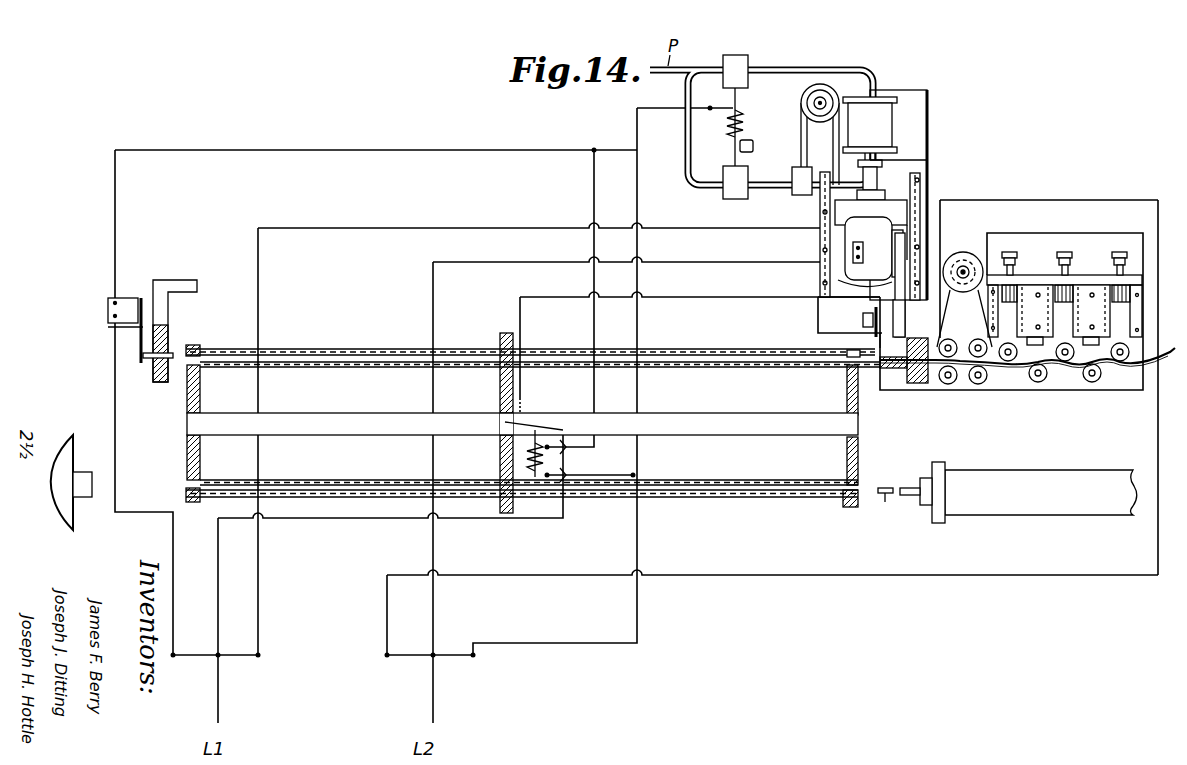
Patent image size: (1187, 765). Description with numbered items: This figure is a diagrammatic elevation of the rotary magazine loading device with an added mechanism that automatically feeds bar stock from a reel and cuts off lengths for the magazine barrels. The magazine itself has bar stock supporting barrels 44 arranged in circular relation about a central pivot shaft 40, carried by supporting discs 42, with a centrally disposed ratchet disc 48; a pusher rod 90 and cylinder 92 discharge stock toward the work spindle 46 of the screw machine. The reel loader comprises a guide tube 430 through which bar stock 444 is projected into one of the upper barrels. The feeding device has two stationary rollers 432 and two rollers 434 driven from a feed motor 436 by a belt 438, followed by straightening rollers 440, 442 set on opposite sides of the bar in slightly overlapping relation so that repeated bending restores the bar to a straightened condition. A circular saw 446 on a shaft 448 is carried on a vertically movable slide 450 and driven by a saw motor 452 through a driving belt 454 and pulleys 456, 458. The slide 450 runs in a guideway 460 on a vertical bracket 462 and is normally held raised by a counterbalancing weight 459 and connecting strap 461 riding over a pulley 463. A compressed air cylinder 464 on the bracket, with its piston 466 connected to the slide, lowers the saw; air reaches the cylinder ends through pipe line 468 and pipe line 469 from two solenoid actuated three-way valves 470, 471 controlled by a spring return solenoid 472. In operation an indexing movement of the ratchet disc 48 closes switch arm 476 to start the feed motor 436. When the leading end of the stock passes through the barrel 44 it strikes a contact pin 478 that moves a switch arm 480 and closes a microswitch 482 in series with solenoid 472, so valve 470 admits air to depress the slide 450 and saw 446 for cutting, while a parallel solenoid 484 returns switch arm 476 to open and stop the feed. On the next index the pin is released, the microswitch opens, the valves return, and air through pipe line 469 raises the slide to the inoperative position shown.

The central pivot shaft 40 is at (352, 413).
The supporting discs 42 is at (203, 403).
The bar stock supporting barrel 44 is at (342, 350).
The work spindle 46 is at (83, 472).
The ratchet disc 48 is at (500, 378).
The pusher rod 90 is at (885, 503).
The cylinder 92 is at (1048, 500).
The guide tube 430 is at (900, 382).
The stationary rollers 432 is at (980, 385).
The driven rollers 434 is at (977, 338).
The feed motor 436 is at (962, 258).
The belt 438 is at (990, 293).
The straightening rollers 440 is at (1097, 385).
The straightening rollers 442 is at (1120, 363).
The bar stock 444 is at (1150, 362).
The circular saw 446 is at (880, 345).
The shaft 448 is at (865, 320).
The slide 450 is at (892, 212).
The saw motor 452 is at (850, 228).
The driving belt 454 is at (828, 288).
The pulley 456 is at (903, 235).
The pulley 458 is at (900, 328).
The counterbalancing weight 459 is at (790, 186).
The guideway 460 is at (920, 195).
The connecting strap 461 is at (843, 142).
The bracket 462 is at (922, 92).
The pulley 463 is at (815, 92).
The cylinder 464 is at (895, 100).
The piston 466 is at (885, 160).
The pipe line 468 is at (823, 68).
The pipe line 469 is at (686, 101).
The three-way valve 470 is at (740, 55).
The three-way valve 471 is at (732, 185).
The spring return solenoid 472 is at (742, 122).
The switch arm 476 is at (536, 430).
The contact pin 478 is at (150, 358).
The switch arm 480 is at (138, 341).
The microswitch 482 is at (128, 300).
The solenoid 484 is at (566, 466).